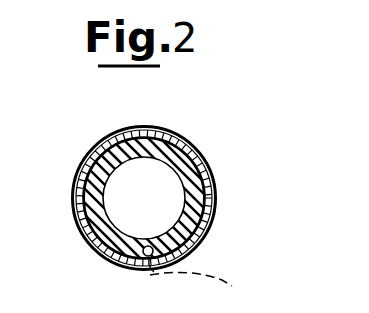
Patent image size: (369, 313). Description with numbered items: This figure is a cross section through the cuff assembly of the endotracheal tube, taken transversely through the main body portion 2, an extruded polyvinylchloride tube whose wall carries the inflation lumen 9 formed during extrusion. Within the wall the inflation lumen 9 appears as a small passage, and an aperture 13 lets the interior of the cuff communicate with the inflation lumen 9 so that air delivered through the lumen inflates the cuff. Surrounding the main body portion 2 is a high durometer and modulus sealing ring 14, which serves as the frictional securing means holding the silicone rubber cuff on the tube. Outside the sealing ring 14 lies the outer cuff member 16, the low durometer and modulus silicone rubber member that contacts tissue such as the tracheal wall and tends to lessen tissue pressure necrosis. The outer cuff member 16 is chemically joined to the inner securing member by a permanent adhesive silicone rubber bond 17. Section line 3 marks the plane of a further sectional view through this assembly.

The main body portion 2 is at (183, 177).
The section line 3- 3 is at (107, 93).
The inflation lumen 9 is at (152, 240).
The aperture 13 is at (205, 288).
The sealing ring 14 is at (207, 165).
The outer cuff member 16 is at (212, 197).
The bond 17 is at (208, 230).